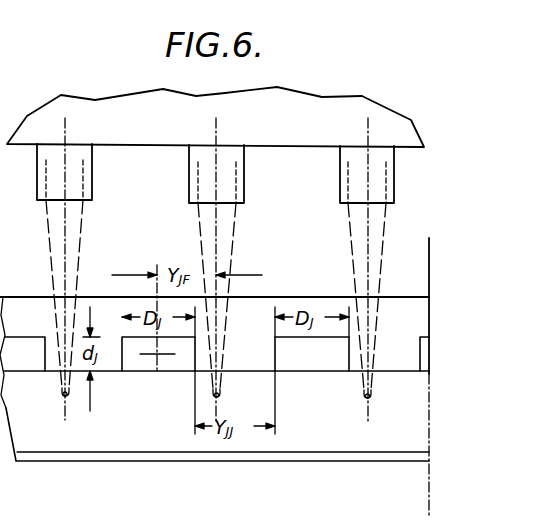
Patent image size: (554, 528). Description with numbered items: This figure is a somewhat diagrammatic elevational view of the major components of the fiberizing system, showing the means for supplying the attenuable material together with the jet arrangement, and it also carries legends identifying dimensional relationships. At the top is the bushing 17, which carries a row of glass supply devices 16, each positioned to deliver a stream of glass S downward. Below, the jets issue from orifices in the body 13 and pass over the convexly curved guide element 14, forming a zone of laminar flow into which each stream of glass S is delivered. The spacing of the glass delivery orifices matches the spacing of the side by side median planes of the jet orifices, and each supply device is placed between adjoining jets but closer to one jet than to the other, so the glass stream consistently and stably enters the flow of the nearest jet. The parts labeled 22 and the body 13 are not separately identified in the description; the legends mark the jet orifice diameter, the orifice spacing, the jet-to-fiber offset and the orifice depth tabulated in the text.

The bushing 17 is at (298, 99).
The glass supply device 16 is at (92, 180).
The substrate body 13 is at (214, 377).
The raised pad / land 22 is at (42, 352).
The convexly curved guide element 14 is at (88, 457).
The stream of glass S is at (66, 396).